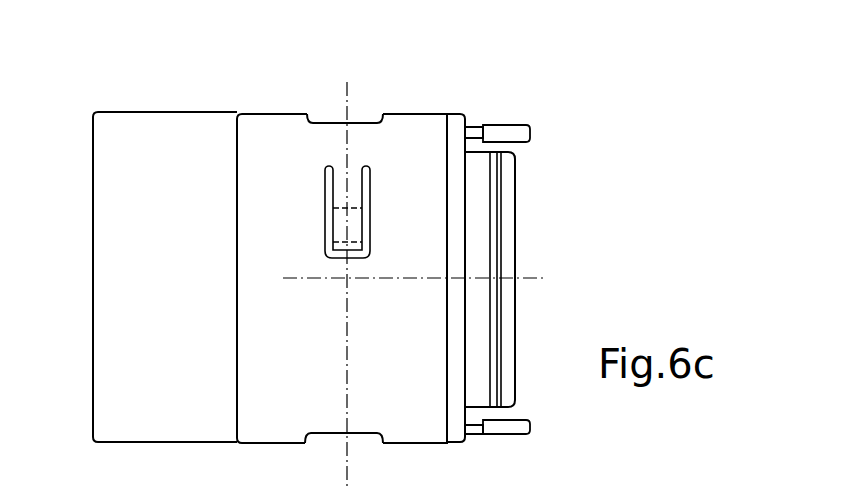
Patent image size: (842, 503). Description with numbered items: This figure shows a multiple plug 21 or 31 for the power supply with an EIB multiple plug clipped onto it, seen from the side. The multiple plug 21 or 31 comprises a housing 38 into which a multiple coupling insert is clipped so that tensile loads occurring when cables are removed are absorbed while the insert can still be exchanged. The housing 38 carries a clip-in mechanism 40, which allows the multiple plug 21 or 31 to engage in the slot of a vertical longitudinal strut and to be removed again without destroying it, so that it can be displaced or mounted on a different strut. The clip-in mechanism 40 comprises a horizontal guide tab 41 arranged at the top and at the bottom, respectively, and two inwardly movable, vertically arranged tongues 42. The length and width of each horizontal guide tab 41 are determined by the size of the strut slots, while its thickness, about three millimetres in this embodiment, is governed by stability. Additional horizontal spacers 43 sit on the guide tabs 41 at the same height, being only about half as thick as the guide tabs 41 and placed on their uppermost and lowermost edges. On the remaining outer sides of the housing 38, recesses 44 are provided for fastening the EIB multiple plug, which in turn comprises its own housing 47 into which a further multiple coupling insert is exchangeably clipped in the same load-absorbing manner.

The multiple plug 21 is at (276, 103).
The multiple plug 31 is at (241, 260).
The housing 38 is at (290, 412).
The clip-in mechanism 40 is at (540, 165).
The horizontal guide tab 41 is at (507, 123).
The tongue 42 is at (515, 211).
The horizontal spacer 43 is at (473, 124).
The recess 44 is at (367, 120).
The housing 47 is at (108, 380).